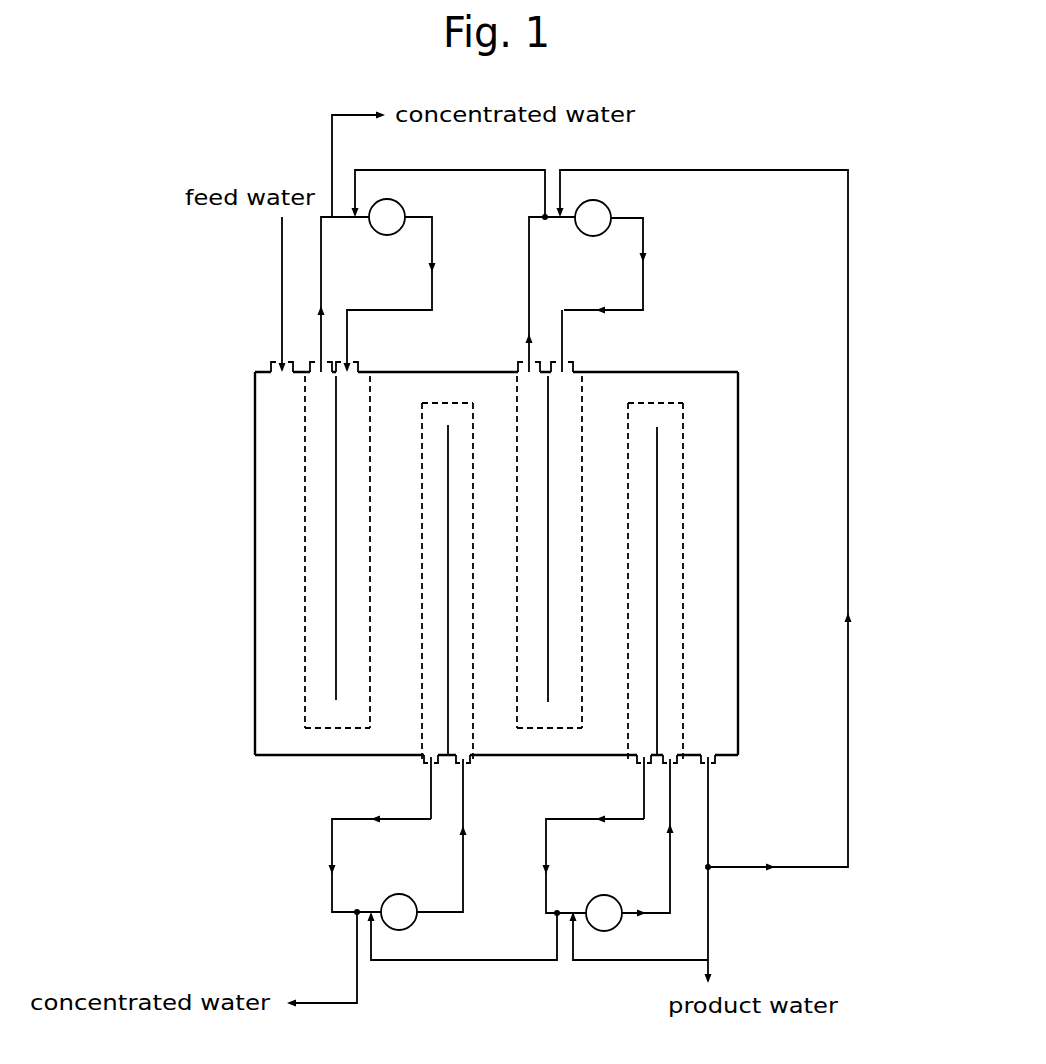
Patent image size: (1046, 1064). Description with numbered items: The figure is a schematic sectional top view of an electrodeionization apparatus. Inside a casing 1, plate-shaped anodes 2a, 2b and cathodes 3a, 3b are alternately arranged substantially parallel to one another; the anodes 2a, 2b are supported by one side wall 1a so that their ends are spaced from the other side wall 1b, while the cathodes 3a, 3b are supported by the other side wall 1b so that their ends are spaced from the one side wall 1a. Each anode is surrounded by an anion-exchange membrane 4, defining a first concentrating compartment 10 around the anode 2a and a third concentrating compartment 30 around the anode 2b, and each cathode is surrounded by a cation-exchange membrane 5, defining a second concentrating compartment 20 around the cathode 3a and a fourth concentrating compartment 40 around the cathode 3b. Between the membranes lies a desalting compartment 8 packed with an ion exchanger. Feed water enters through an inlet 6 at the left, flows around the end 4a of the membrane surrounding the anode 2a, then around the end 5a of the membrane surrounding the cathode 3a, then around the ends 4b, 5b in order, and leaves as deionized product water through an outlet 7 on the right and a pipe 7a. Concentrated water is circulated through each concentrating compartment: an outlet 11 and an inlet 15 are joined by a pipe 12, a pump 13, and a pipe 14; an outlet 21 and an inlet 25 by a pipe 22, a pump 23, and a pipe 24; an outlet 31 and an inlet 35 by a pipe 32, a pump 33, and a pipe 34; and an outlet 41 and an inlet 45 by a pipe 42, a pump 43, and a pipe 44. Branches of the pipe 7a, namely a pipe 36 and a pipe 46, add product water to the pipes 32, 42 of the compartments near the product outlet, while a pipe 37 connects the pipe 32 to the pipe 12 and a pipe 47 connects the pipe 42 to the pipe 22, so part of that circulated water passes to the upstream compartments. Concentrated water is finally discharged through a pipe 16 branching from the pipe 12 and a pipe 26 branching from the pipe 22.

The casing 1 is at (738, 483).
The one side wall 1a is at (654, 372).
The other side wall 1b is at (344, 758).
The anode 2a is at (336, 477).
The anode 2b is at (548, 477).
The cathode 3a is at (448, 477).
The cathode 3b is at (657, 477).
The anion-exchange membrane 4 is at (372, 593).
The end of anion-exchange membrane 4a is at (347, 733).
The end of anion-exchange membrane 4b is at (565, 732).
The cation-exchange membrane 5 is at (475, 593).
The end of cation-exchange membrane 5a is at (450, 405).
The end of cation-exchange membrane 5b is at (657, 403).
The inlet 6 is at (280, 366).
The outlet 7 is at (720, 775).
The pipe 7a is at (709, 833).
The desalting compartment 8 is at (403, 675).
The first concentrating compartment 10 is at (371, 648).
The outlet 11 is at (320, 366).
The pipe 12 is at (322, 272).
The pump 13 is at (405, 210).
The pipe 14 is at (433, 290).
The inlet 15 is at (353, 365).
The pipe 16 is at (332, 118).
The second concentrating compartment 20 is at (473, 646).
The outlet 21 is at (427, 765).
The pipe 22 is at (392, 820).
The pump 23 is at (413, 927).
The pipe 24 is at (462, 870).
The inlet 25 is at (470, 765).
The pipe 26 is at (358, 985).
The third concentrating compartment 30 is at (572, 677).
The outlet 31 is at (526, 369).
The pipe 32 is at (530, 270).
The pump 33 is at (611, 212).
The pipe 34 is at (644, 283).
The inlet 35 is at (567, 367).
The pipe 36 is at (729, 170).
The pipe 37 is at (420, 170).
The fourth concentrating compartment 40 is at (683, 677).
The outlet 41 is at (638, 768).
The pipe 42 is at (567, 822).
The pump 43 is at (622, 923).
The pipe 44 is at (669, 863).
The inlet 45 is at (675, 765).
The pipe 46 is at (627, 962).
The pipe 47 is at (506, 958).